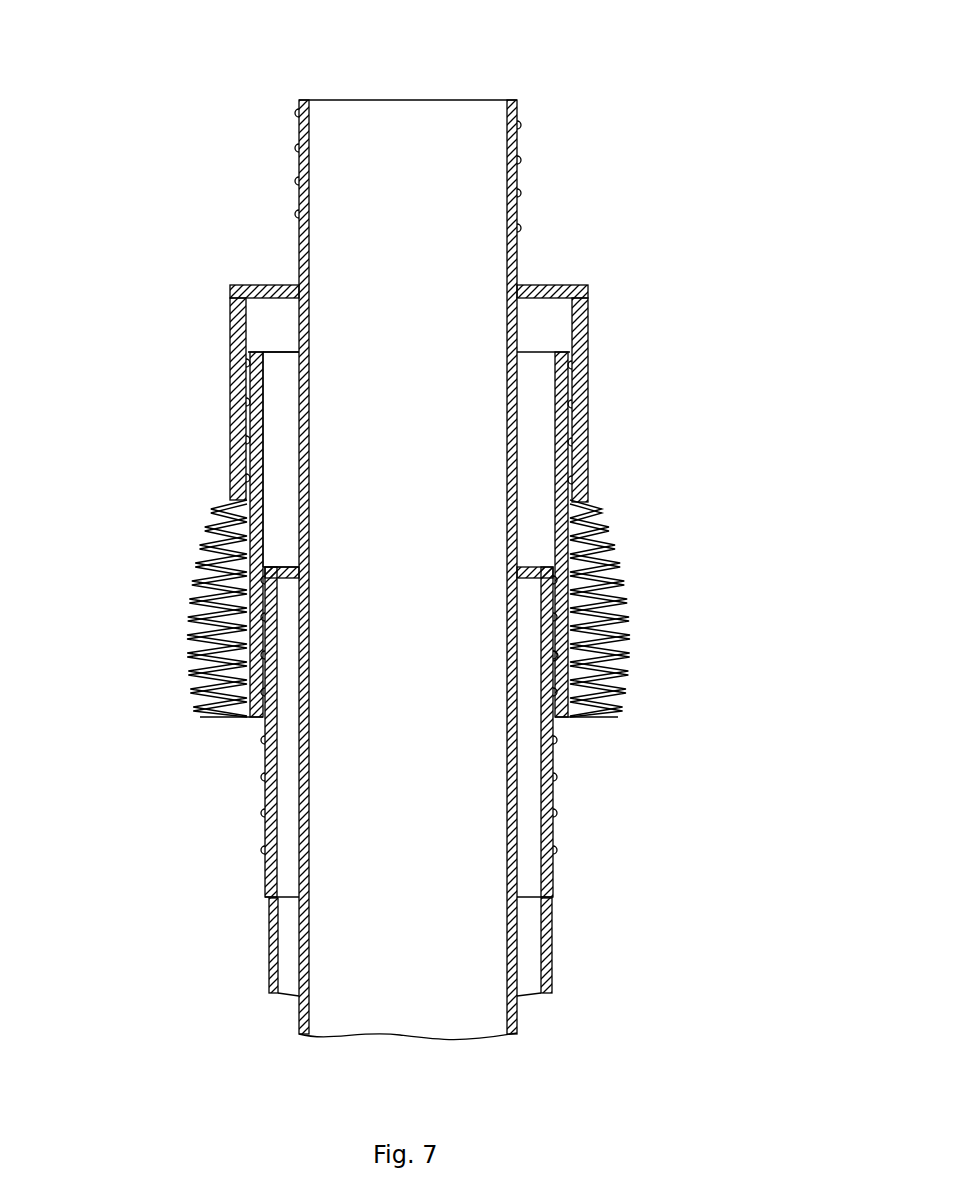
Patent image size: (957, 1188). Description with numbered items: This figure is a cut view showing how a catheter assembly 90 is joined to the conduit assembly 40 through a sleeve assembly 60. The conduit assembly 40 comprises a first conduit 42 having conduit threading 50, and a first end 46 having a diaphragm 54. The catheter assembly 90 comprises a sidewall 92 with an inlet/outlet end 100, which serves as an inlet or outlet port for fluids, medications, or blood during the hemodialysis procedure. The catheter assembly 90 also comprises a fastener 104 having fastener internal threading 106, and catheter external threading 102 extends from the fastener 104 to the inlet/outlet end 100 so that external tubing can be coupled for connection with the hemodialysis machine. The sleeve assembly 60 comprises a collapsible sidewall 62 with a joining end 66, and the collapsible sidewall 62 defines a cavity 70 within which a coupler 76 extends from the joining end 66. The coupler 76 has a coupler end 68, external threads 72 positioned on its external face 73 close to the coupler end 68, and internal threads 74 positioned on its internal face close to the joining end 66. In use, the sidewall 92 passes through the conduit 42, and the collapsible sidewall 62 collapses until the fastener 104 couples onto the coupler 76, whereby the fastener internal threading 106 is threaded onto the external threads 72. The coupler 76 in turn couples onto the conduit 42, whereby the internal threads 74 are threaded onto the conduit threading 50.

The inlet/outlet end 100 is at (431, 99).
The catheter assembly 90 is at (388, 149).
The sidewall 92 is at (299, 1017).
The catheter external threading 102 is at (296, 150).
The fastener 104 is at (230, 318).
The fastener internal threading 106 is at (246, 368).
The coupler end 68 is at (588, 318).
The diaphragm 54 is at (571, 442).
The coupler 76 is at (282, 417).
The external threads 72 is at (570, 390).
The first end 46 is at (288, 560).
The conduit assembly 40 is at (571, 885).
The first conduit 42 is at (555, 952).
The conduit threading 50 is at (562, 830).
The external face 73 is at (565, 662).
The internal threads 74 is at (250, 690).
The cavity 70 is at (230, 627).
The collapsible sidewall 62 is at (610, 542).
The sleeve assembly 60 is at (671, 619).
The joining end 66 is at (568, 718).